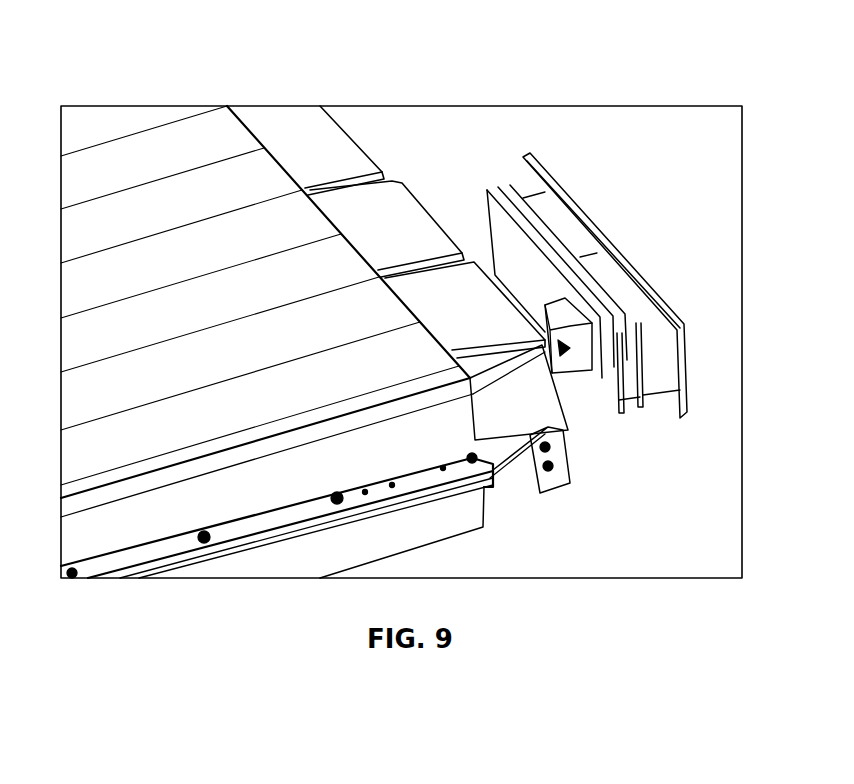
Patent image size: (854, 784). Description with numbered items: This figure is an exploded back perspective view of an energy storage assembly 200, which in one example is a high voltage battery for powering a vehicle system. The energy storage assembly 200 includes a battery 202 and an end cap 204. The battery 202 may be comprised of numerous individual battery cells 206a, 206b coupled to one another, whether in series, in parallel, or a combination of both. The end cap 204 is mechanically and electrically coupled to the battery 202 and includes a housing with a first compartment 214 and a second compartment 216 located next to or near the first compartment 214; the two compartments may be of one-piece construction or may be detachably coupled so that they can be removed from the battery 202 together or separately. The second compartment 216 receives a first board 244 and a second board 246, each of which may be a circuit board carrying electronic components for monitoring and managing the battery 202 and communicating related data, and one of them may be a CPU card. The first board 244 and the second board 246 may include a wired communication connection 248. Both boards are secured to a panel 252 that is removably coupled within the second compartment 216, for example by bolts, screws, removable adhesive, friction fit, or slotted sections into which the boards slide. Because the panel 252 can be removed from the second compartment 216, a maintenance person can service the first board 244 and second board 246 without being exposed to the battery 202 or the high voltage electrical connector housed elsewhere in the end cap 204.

The energy storage assembly 200 is at (297, 100).
The battery 202 is at (155, 147).
The end cap 204 is at (367, 128).
The battery cell 206a is at (90, 128).
The battery cell 206b is at (292, 560).
The first compartment 214 is at (340, 77).
The second compartment 216 is at (460, 539).
The first board 244 is at (618, 400).
The second board 246 is at (643, 413).
The wired communication connection 248 is at (580, 372).
The panel 252 is at (628, 262).